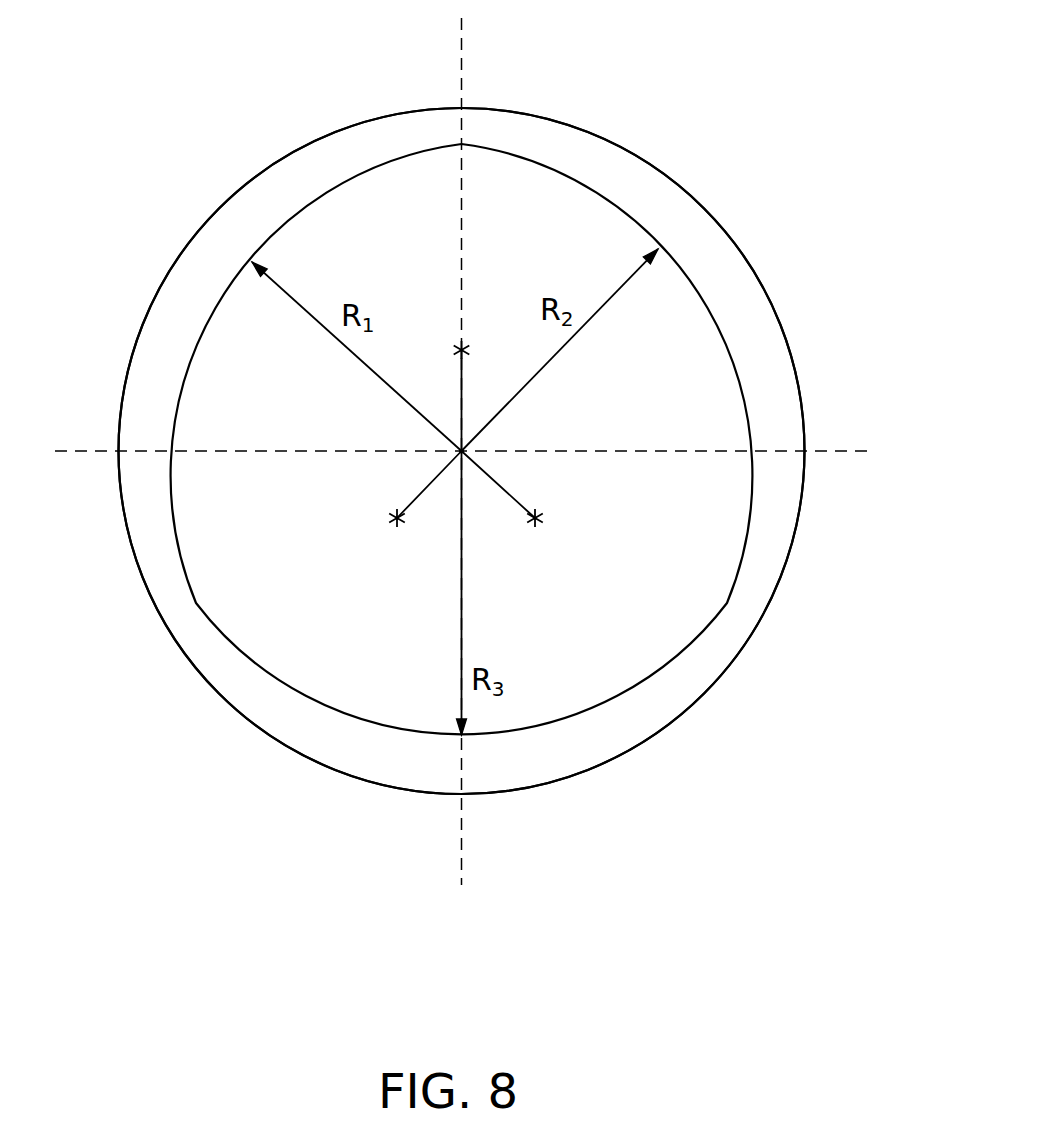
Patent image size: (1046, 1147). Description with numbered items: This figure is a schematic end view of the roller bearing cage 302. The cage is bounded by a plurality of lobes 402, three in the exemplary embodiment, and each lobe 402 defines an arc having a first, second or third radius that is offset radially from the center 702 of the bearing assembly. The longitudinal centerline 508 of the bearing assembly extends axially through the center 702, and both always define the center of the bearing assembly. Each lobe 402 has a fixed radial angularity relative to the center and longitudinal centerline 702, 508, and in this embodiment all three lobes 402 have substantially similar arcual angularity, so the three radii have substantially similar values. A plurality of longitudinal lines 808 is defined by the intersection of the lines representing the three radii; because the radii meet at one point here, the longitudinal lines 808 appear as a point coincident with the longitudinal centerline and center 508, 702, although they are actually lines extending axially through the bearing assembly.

The roller bearing cage 302 is at (641, 70).
The lobe 402 is at (216, 210).
The longitudinal centerline 508 is at (598, 416).
The center 702 is at (598, 416).
The longitudinal lines 808 is at (462, 451).